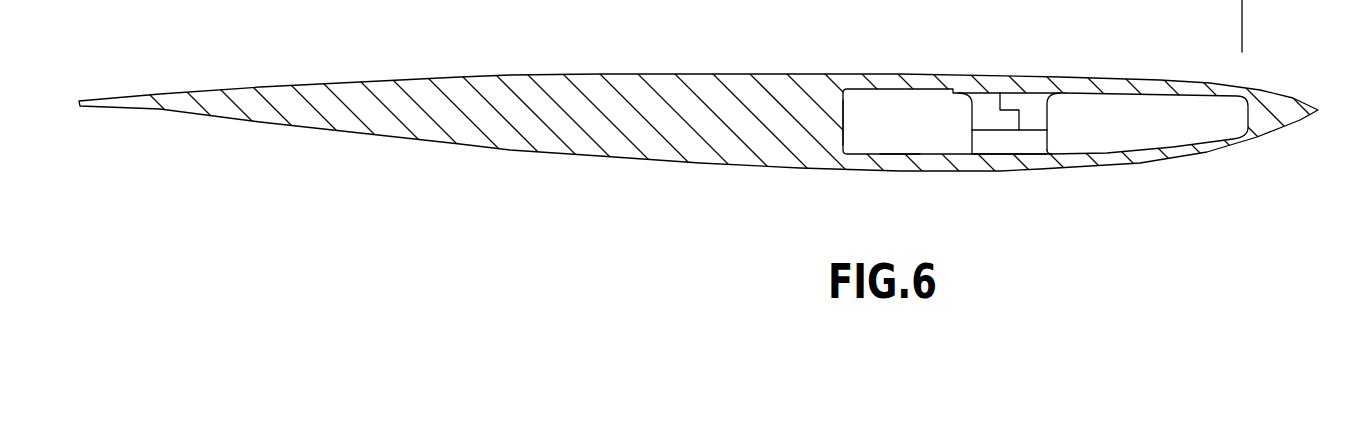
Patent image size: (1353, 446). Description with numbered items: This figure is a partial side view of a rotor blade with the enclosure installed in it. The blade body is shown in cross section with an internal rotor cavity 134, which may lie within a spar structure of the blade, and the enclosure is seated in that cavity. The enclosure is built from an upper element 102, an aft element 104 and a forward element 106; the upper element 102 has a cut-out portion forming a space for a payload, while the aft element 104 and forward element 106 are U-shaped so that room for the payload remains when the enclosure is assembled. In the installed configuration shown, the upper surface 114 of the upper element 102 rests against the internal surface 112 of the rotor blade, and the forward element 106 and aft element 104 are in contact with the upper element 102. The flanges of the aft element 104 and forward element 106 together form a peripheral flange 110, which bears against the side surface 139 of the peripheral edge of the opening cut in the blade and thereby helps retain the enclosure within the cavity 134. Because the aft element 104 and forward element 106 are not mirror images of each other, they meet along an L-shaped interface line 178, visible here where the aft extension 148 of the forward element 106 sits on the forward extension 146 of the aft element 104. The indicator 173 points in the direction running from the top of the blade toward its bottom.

The upper element 102 is at (1052, 154).
The aft element 104 is at (893, 99).
The forward element 106 is at (1050, 118).
The peripheral flange 110 is at (968, 120).
The internal surface 112 is at (903, 148).
The upper surface 114 is at (1003, 157).
The internal rotor cavity 134 is at (853, 140).
The side surface 139 is at (1053, 105).
The forward extension 146 is at (1076, 100).
The aft extension 148 is at (1014, 96).
The L-shaped interface line 178 is at (1003, 106).
The direction indicator 173 is at (1242, 34).